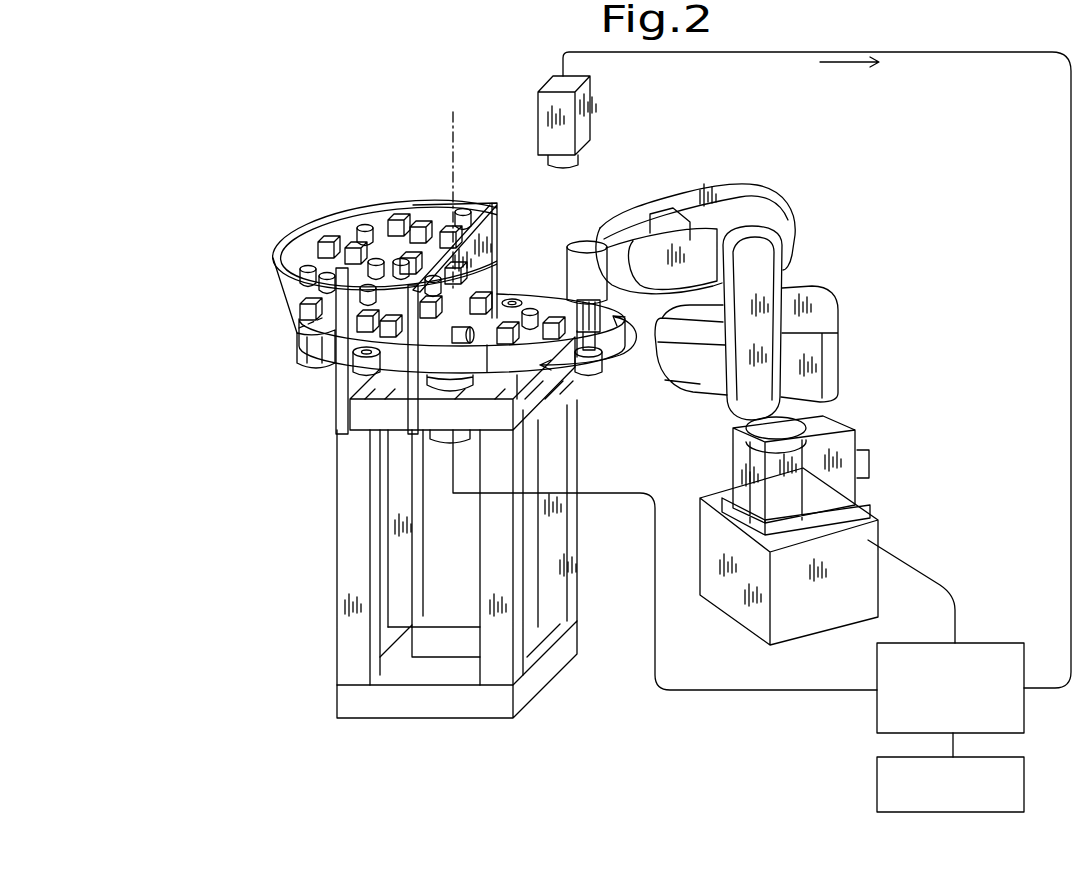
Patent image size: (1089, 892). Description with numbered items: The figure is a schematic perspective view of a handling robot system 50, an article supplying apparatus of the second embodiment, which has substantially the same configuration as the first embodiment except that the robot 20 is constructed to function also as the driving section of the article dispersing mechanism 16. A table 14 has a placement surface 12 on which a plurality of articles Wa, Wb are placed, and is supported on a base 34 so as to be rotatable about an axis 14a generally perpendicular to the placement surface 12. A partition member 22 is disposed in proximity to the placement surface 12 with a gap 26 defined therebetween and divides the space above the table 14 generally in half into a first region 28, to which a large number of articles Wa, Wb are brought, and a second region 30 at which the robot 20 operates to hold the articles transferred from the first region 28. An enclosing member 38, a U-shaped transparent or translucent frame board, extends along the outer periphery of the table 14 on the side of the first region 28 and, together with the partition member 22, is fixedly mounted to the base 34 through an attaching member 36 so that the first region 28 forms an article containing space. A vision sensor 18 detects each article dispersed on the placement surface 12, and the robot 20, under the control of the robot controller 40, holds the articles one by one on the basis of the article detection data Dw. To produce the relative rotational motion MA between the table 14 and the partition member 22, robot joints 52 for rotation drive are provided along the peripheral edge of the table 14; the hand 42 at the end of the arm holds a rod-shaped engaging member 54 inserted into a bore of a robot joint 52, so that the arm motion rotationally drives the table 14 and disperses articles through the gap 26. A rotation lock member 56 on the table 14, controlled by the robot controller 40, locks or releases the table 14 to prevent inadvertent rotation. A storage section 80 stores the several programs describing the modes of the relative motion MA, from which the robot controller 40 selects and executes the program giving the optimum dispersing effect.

The placement surface 12 is at (463, 337).
The table 14 is at (366, 260).
The axis 14a is at (453, 128).
The article dispersing mechanism 16 is at (478, 205).
The vision sensor 18 is at (583, 118).
The robot 20 is at (770, 385).
The partition member 22 is at (471, 229).
The gap 26 is at (475, 297).
The first region 28 is at (326, 235).
The second region 30 is at (581, 316).
The base 34 is at (347, 527).
The attaching member 36 is at (413, 413).
The enclosing member 38 is at (292, 298).
The robot controller 40 is at (996, 643).
The hand 42 is at (670, 245).
The handling robot system 50 is at (373, 559).
The robot joint 52 is at (365, 367).
The engaging member 54 is at (600, 342).
The rotation lock member 56 is at (440, 440).
The storage section 80 is at (1024, 786).
The article Wa is at (369, 233).
The article Wb is at (405, 215).
The relative motion MA is at (596, 346).
The article detection data Dw is at (849, 75).